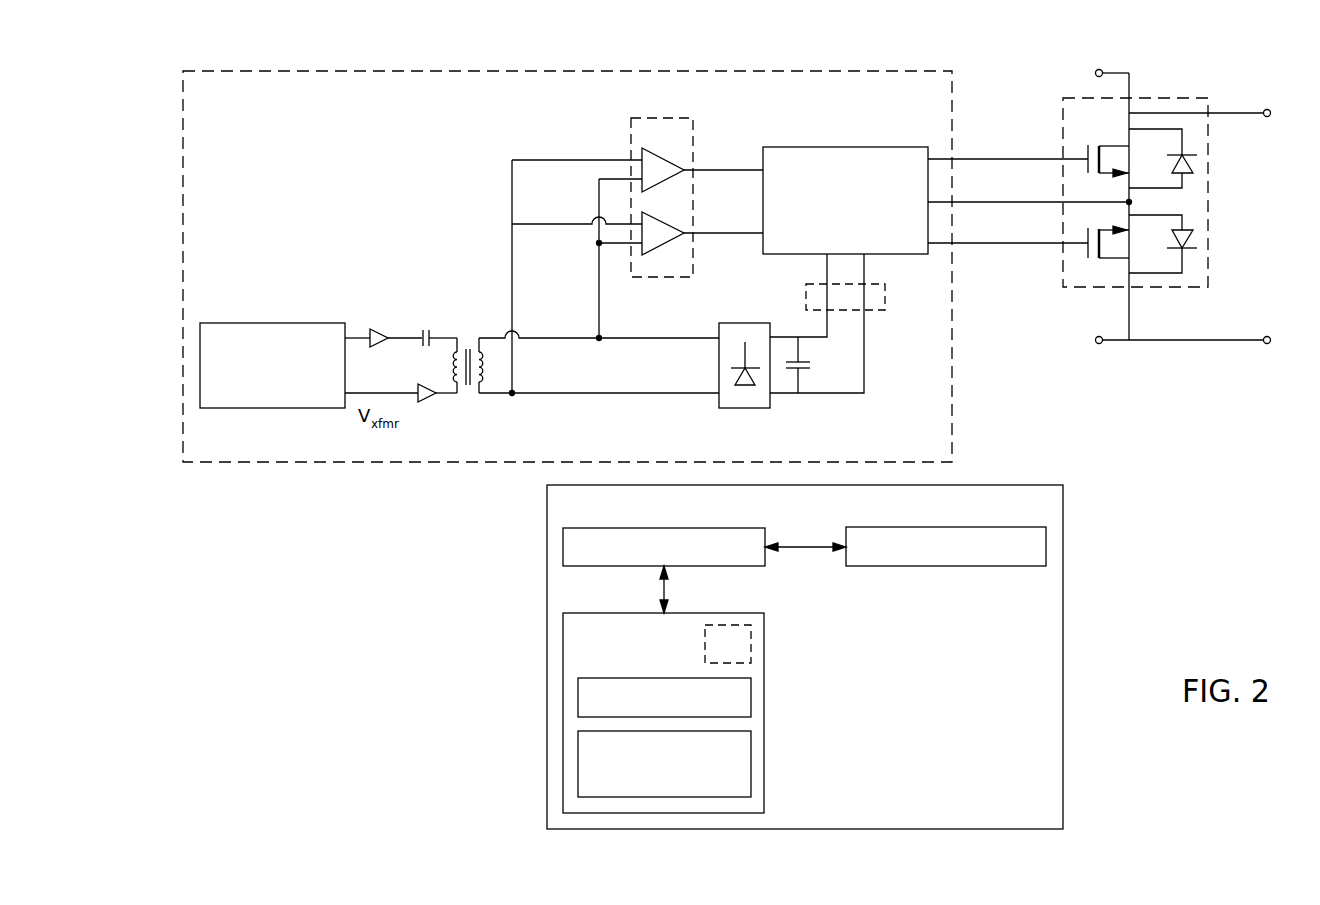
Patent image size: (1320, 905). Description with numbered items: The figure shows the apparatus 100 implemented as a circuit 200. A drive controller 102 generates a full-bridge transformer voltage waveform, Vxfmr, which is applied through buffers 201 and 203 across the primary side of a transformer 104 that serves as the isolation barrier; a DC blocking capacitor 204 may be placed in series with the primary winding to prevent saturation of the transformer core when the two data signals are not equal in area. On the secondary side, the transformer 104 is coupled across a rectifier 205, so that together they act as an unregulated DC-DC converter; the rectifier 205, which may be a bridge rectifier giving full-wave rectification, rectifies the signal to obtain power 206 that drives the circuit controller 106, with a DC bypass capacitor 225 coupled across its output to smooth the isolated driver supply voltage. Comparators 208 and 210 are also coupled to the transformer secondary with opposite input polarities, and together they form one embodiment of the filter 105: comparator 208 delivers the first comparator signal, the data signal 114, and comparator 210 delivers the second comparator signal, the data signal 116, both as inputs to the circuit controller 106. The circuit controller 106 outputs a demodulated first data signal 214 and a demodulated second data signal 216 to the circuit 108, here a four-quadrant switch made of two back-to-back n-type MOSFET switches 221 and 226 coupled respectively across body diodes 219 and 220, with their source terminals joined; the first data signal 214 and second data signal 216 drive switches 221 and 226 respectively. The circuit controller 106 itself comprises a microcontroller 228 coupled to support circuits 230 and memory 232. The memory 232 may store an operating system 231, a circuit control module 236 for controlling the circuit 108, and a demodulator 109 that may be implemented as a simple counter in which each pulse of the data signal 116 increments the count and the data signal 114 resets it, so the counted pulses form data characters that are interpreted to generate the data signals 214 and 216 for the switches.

The apparatus 100 is at (183, 127).
The drive controller 102 is at (328, 322).
The transformer 104 is at (468, 390).
The filter 105 is at (631, 128).
The circuit controller 106 is at (848, 147).
The circuit 108 is at (1185, 97).
The demodulator 109 is at (578, 693).
The data signal 114 is at (747, 168).
The data signal 116 is at (750, 242).
The circuit 200 is at (1290, 81).
The buffer 201 is at (378, 335).
The buffer 203 is at (428, 400).
The capacitor 204 is at (429, 330).
The rectifier 205 is at (719, 371).
The power 206 is at (885, 298).
The comparator 208 is at (658, 150).
The comparator 210 is at (658, 256).
The first data signal 214 is at (997, 158).
The second data signal 216 is at (997, 245).
The diode 219 is at (1197, 160).
The diode 220 is at (1197, 240).
The MOSFET switch 221 is at (1113, 146).
The capacitor 225 is at (800, 390).
The MOSFET switch 226 is at (1113, 258).
The microcontroller 228 is at (563, 539).
The support circuits 230 is at (1047, 537).
The operating system 231 is at (751, 632).
The memory 232 is at (563, 640).
The circuit control module 236 is at (578, 746).